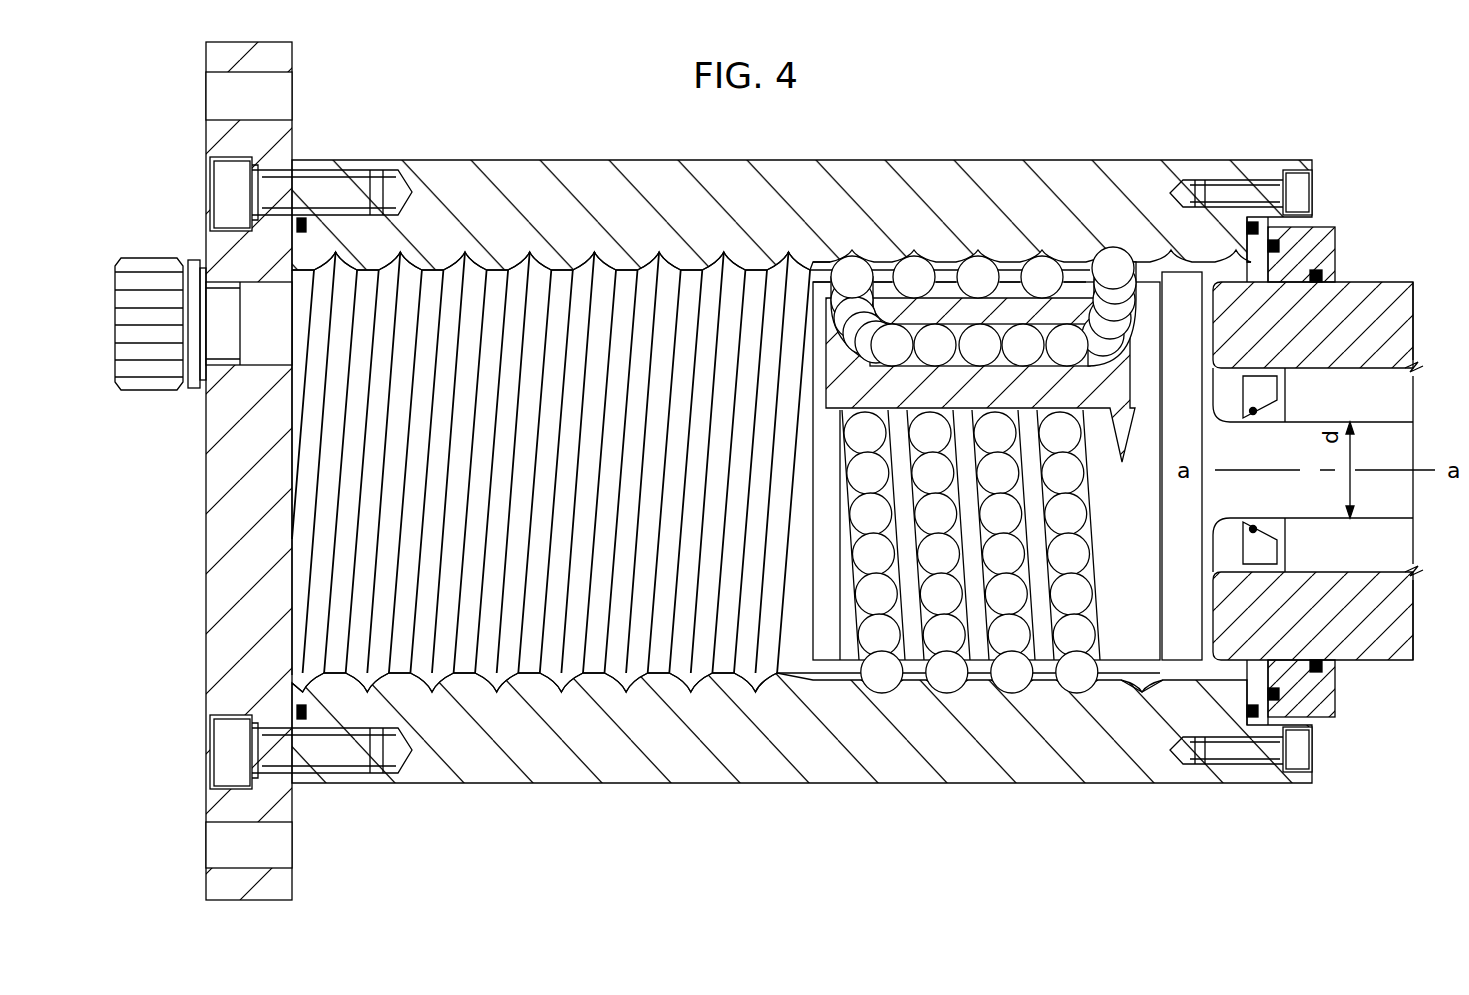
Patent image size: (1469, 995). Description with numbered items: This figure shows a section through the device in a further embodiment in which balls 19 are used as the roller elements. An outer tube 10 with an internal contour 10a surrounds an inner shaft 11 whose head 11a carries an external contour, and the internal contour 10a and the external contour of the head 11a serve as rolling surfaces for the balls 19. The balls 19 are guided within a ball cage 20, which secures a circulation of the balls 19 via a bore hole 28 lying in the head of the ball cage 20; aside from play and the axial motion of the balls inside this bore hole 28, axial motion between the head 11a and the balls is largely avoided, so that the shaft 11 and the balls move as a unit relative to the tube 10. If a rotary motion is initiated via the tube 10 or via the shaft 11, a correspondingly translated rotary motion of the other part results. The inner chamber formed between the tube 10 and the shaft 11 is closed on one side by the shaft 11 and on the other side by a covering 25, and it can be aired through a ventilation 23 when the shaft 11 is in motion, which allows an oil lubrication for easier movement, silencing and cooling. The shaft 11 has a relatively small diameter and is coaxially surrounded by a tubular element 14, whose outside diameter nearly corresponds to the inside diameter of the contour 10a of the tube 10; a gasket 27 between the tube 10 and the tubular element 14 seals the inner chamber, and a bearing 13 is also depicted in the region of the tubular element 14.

The outer tube 10 is at (657, 180).
The internal contour 10a is at (598, 290).
The inner shaft 11 is at (1392, 457).
The head 11a is at (1158, 632).
The bearing 13 is at (1268, 547).
The tubular element 14 is at (1386, 315).
The balls 19 is at (915, 280).
The ball cage 20 is at (1100, 505).
The ventilation 23 is at (215, 300).
The covering 25 is at (240, 655).
The gasket 27 is at (1310, 700).
The bore hole 28 is at (1110, 358).